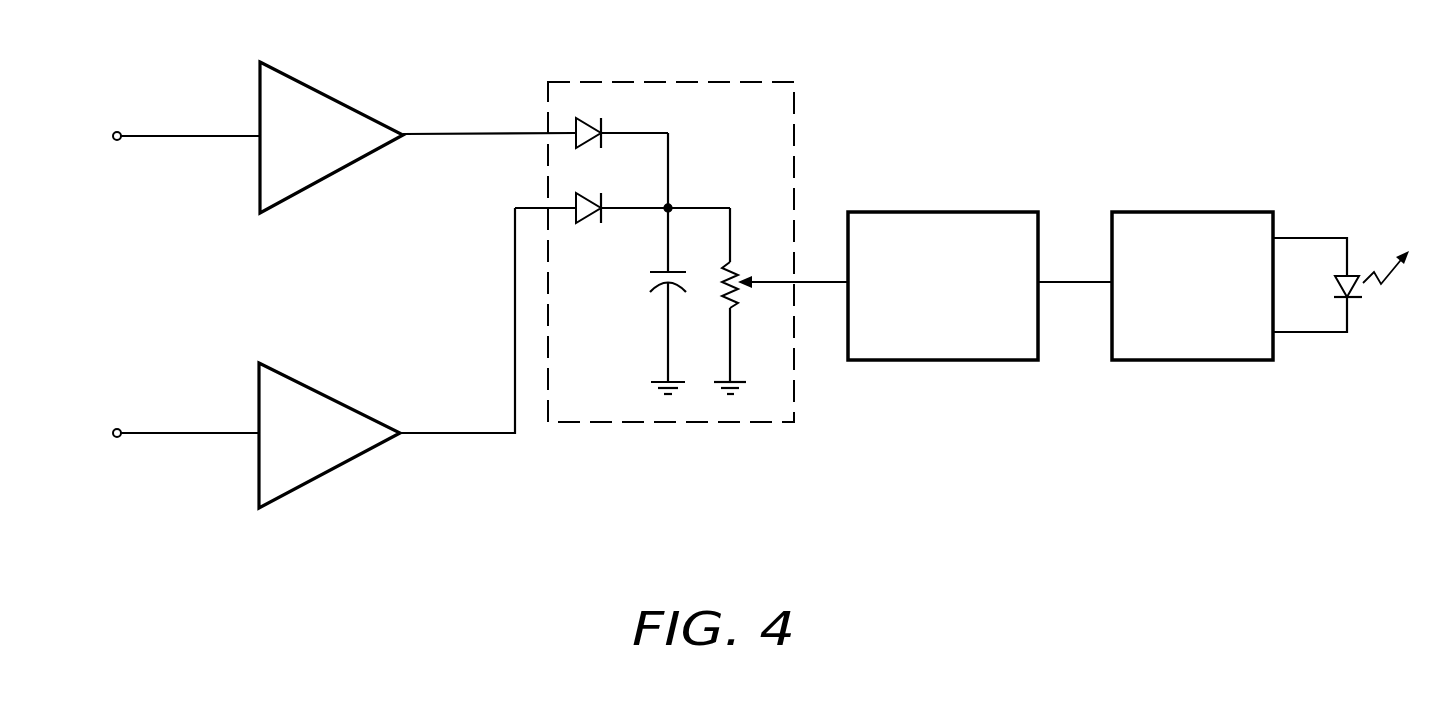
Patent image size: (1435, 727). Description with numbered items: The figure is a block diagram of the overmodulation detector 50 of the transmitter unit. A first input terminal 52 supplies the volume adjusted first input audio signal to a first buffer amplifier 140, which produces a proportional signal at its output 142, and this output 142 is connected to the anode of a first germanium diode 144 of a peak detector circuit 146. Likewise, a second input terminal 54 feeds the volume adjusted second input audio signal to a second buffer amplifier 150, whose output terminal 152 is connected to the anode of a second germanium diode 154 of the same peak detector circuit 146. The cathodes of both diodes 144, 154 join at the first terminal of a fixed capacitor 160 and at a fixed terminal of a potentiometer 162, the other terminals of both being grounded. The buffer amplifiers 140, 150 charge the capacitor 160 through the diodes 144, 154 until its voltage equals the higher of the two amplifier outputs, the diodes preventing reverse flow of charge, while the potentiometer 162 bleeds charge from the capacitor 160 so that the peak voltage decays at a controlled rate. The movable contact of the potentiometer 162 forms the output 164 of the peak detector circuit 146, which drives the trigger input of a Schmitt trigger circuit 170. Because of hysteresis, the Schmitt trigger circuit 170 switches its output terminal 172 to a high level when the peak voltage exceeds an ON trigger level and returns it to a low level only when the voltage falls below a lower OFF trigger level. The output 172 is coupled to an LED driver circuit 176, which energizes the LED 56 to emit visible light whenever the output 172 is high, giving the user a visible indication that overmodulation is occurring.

The overmodulation detector 50 is at (819, 26).
The first input terminal 52 is at (113, 433).
The second input terminal 54 is at (113, 136).
The LED 56 is at (1357, 298).
The first buffer amplifier 140 is at (329, 435).
The output 142 is at (460, 436).
The first germanium diode 144 is at (584, 220).
The peak detector circuit 146 is at (638, 424).
The second buffer amplifier 150 is at (331, 137).
The output terminal 152 is at (464, 133).
The second germanium diode 154 is at (590, 120).
The fixed capacitor 160 is at (650, 284).
The potentiometer 162 is at (738, 268).
The output 164 is at (820, 282).
The Schmitt trigger circuit 170 is at (1008, 212).
The output terminal 172 is at (1078, 283).
The LED driver circuit 176 is at (1197, 212).